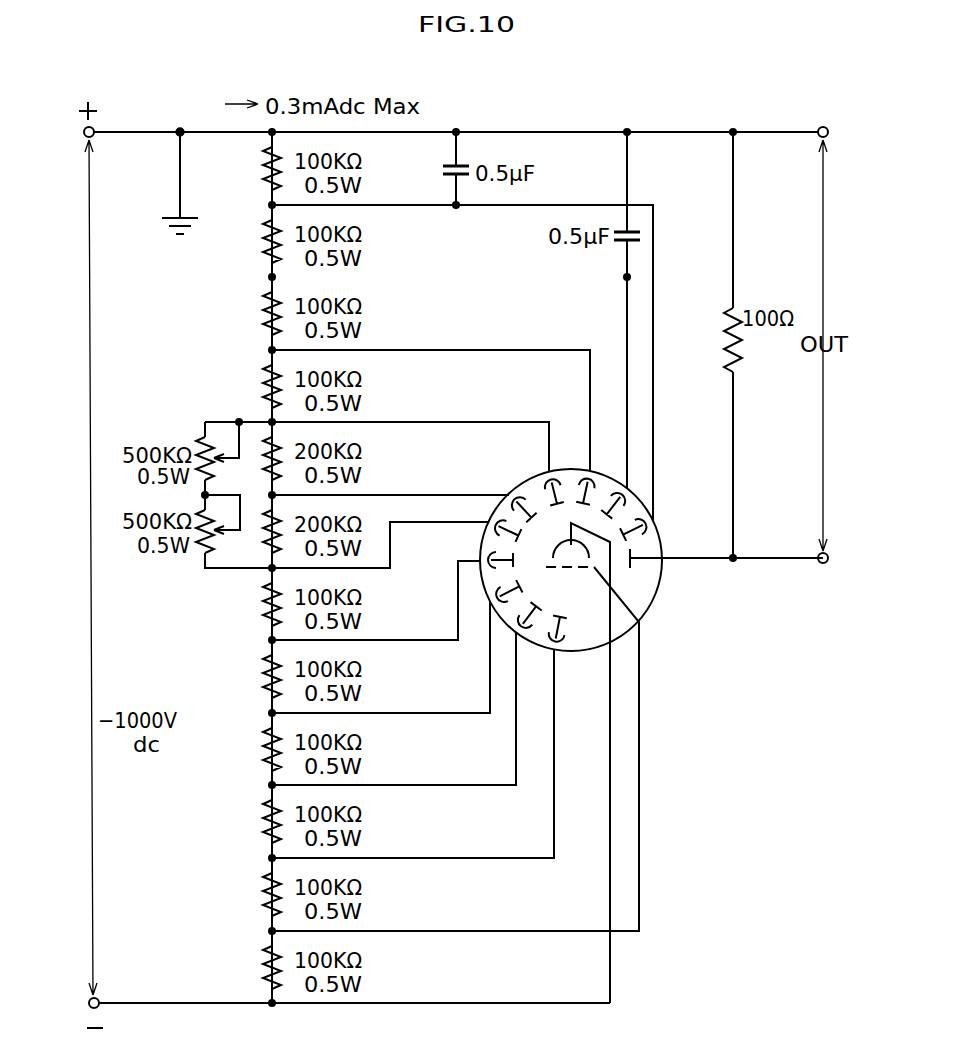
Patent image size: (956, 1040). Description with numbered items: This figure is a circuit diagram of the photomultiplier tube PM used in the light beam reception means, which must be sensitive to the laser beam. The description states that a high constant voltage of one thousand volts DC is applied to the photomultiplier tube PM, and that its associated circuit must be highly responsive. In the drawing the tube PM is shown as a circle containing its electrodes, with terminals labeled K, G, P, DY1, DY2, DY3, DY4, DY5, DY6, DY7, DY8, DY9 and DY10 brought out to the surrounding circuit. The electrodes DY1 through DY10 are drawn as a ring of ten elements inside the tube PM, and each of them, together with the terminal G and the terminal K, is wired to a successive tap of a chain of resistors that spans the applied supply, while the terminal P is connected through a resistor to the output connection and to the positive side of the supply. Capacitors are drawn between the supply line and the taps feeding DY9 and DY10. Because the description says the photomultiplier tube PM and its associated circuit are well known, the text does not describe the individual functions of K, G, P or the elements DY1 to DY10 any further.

The photomultiplier tube PM is at (661, 597).
The cathode K is at (587, 763).
The grid G is at (464, 749).
The anode (plate) P is at (726, 567).
The dynode 1 DY1 is at (554, 652).
The dynode 2 DY2 is at (516, 634).
The dynode 3 DY3 is at (490, 602).
The dynode 4 DY4 is at (478, 561).
The dynode 5 DY5 is at (488, 522).
The dynode 6 DY6 is at (512, 493).
The dynode 7 DY7 is at (548, 471).
The dynode 8 DY8 is at (588, 469).
The dynode 9 DY9 is at (627, 486).
The dynode 10 DY10 is at (653, 520).